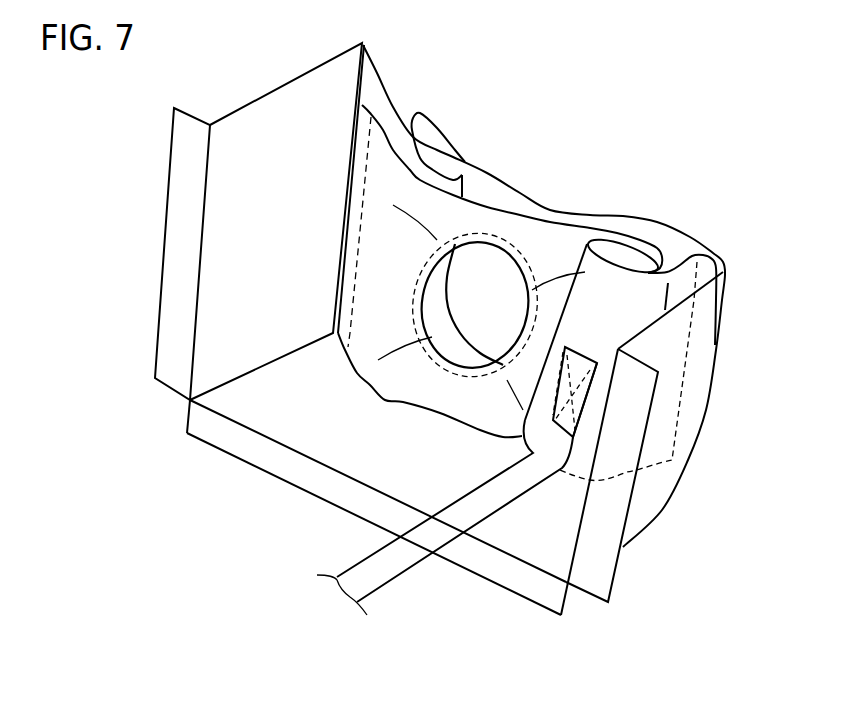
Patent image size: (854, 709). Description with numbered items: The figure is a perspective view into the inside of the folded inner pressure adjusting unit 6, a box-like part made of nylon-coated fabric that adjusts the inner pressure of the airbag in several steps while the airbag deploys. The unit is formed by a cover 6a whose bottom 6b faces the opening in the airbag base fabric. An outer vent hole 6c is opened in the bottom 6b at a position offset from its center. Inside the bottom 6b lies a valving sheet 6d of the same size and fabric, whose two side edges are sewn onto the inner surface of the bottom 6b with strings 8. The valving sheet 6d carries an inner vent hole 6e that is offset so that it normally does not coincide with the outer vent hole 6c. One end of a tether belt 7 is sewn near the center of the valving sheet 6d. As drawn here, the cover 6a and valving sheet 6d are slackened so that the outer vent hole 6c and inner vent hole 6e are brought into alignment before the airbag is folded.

The inner pressure adjusting unit 6 is at (200, 474).
The cover 6a is at (273, 90).
The bottom 6b is at (443, 140).
The outer vent hole 6c is at (447, 277).
The valving sheet 6d is at (617, 283).
The inner vent hole 6e is at (423, 300).
The tether belt 7 is at (383, 565).
The strings 8 is at (357, 237).